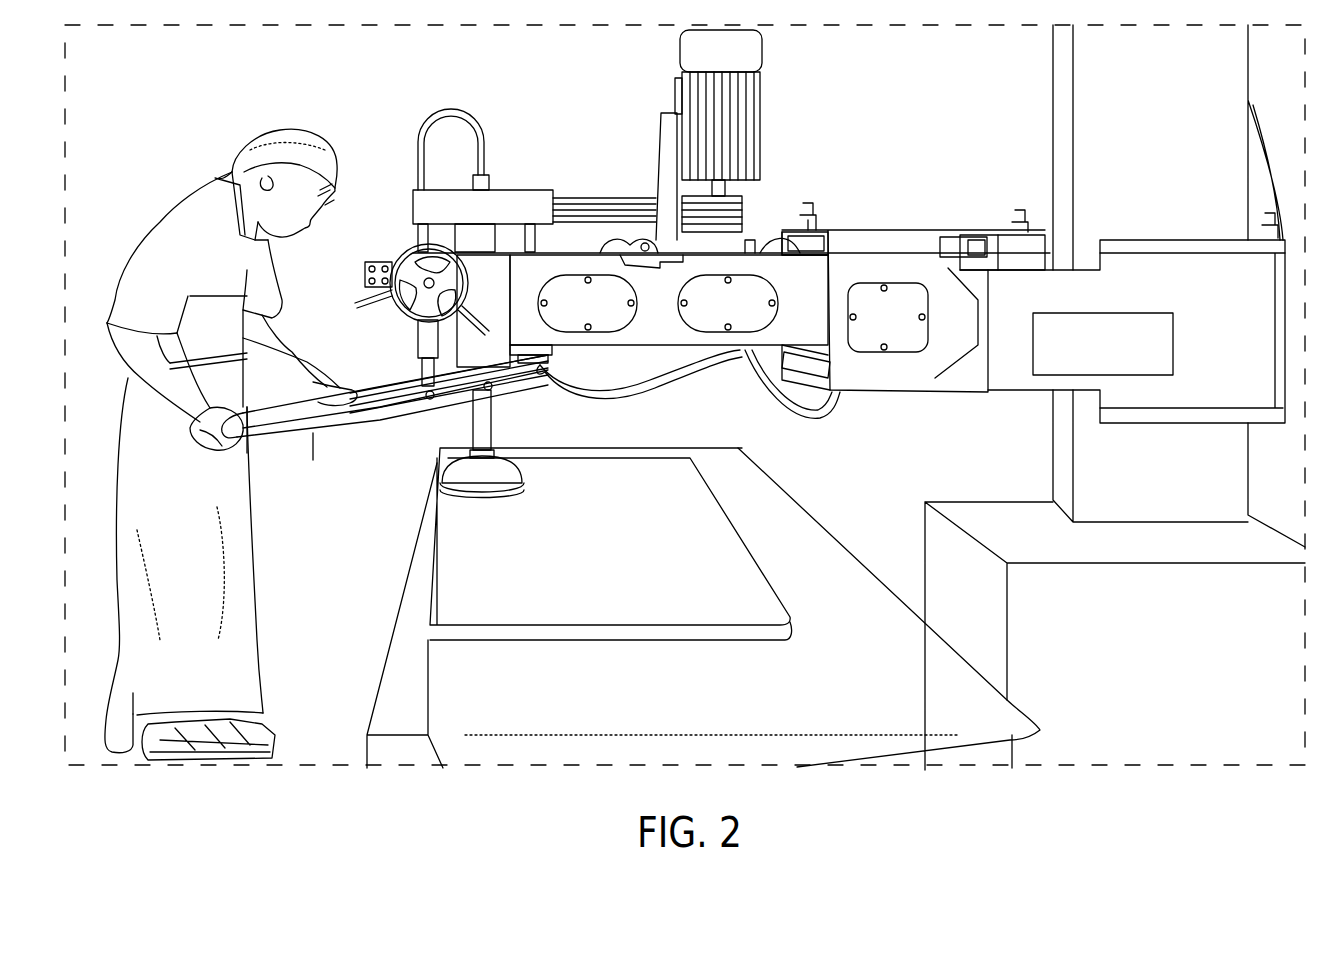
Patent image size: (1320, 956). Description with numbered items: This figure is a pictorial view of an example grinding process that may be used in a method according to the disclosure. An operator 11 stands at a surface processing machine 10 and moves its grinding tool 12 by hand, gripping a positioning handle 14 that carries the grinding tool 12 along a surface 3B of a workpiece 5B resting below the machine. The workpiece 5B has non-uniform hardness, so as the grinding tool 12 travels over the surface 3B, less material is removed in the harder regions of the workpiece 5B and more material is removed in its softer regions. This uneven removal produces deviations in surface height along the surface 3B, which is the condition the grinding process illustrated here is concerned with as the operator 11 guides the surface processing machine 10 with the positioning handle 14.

The surface processing machine 10 is at (868, 230).
The operator 11 is at (163, 223).
The grinding tool 12 is at (510, 472).
The positioning handle 14 is at (307, 432).
The surface 3B is at (610, 590).
The workpiece 5B is at (783, 593).